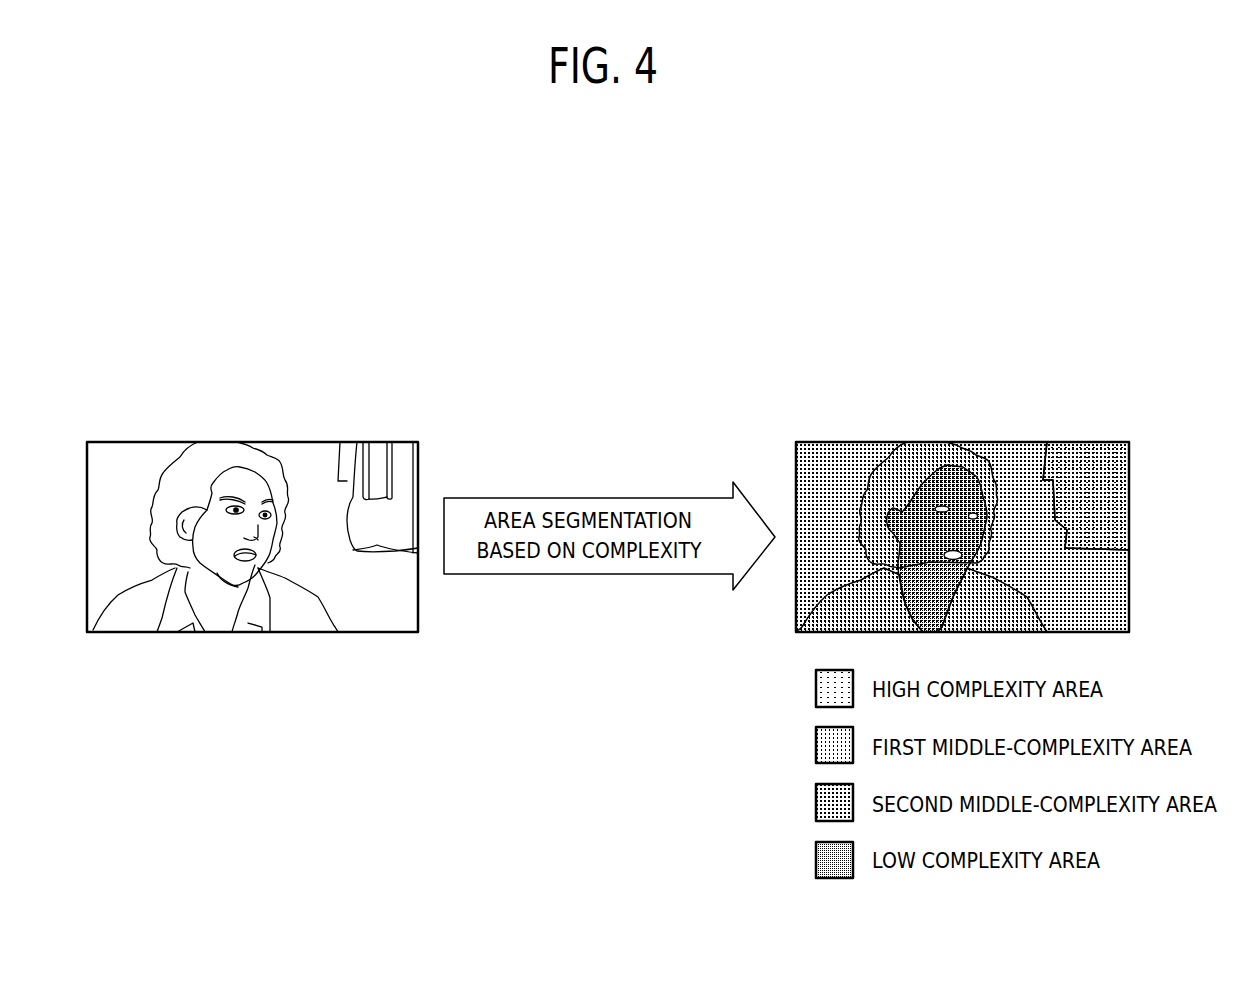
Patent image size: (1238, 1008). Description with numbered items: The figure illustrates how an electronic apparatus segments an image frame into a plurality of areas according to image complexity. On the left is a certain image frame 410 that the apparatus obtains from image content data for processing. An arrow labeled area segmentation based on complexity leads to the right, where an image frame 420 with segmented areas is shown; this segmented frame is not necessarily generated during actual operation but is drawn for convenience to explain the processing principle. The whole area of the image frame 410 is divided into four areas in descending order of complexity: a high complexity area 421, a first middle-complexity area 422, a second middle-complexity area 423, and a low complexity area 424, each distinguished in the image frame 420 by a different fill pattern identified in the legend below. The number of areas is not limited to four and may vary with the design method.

The image frame 410 is at (252, 405).
The image frame with segmented areas 420 is at (967, 405).
The high complexity area 421 is at (816, 691).
The first middle-complexity area 422 is at (816, 748).
The second middle-complexity area 423 is at (816, 805).
The low complexity area 424 is at (816, 863).